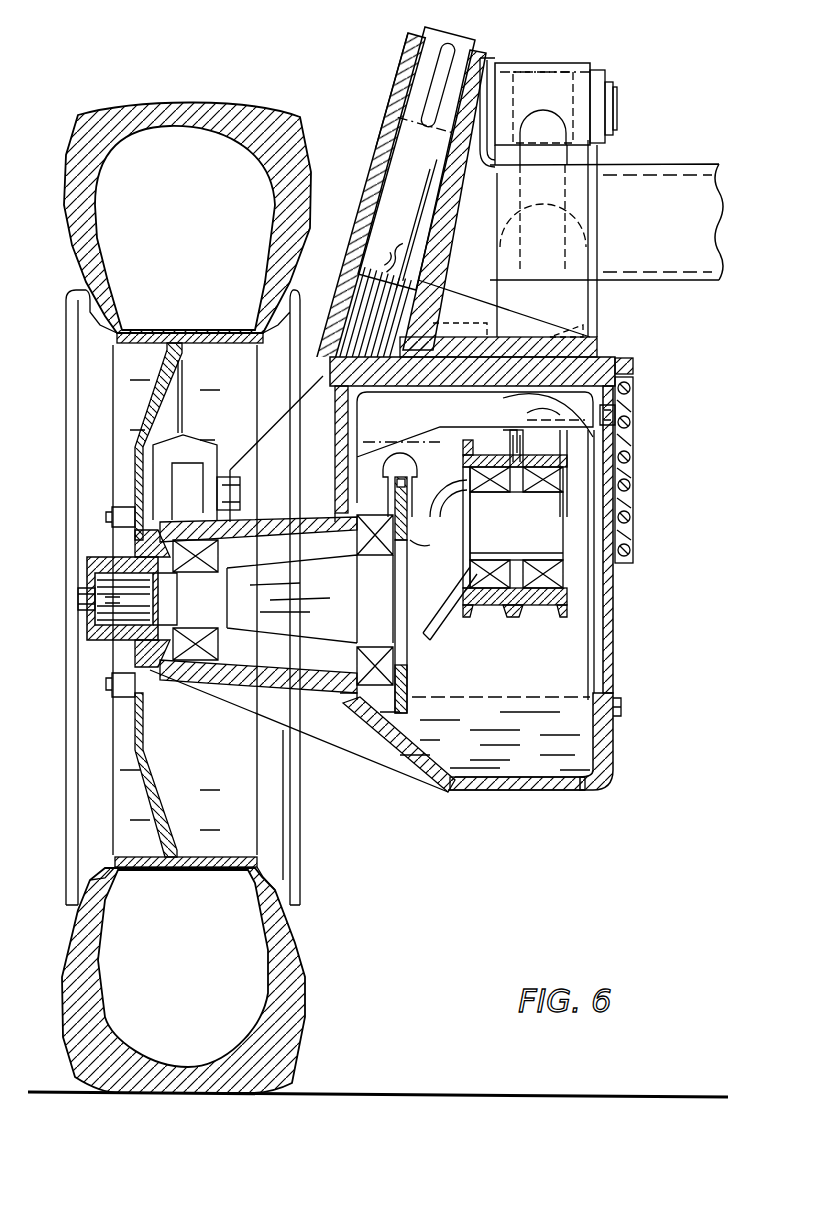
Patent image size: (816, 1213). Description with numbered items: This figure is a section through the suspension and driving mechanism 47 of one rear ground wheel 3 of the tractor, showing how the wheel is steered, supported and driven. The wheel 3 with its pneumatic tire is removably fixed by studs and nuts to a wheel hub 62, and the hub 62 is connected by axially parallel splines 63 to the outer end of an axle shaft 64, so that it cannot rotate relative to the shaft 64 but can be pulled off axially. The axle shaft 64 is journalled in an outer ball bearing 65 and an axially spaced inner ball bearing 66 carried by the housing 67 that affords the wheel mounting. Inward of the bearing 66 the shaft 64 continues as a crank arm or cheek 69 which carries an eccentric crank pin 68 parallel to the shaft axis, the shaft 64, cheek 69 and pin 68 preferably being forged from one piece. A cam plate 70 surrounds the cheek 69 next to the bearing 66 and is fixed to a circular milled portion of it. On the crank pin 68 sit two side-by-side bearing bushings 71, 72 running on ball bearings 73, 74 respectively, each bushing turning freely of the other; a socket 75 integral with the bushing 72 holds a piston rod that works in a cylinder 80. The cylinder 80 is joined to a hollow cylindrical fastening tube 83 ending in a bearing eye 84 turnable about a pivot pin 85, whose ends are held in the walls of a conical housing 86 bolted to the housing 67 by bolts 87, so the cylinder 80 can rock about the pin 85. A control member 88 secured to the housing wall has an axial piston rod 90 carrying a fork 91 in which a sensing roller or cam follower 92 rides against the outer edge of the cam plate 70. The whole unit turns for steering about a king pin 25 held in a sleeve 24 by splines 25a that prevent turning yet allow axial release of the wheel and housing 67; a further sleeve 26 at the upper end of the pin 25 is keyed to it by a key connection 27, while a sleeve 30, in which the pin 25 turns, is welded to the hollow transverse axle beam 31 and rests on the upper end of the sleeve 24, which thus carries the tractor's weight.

The rear ground wheel 3 is at (308, 985).
The sleeve 24 is at (339, 292).
The king pin or steering pivot pin 25 is at (437, 27).
The splines 25a is at (397, 250).
The further sleeve 26 is at (404, 50).
The key connection 27 is at (460, 37).
The sleeve 30 is at (377, 153).
The hollow transverse axle beam 31 is at (692, 281).
The driving mechanism 47 is at (399, 822).
The wheel hub 62 is at (85, 560).
The axially parallel splines 63 is at (95, 645).
The axle shaft 64 is at (258, 640).
The outer ball bearing 65 is at (238, 680).
The inner ball bearing 66 is at (345, 708).
The housing 67 is at (495, 790).
The crank pin 68 is at (578, 565).
The crank arm or cheek 69 is at (432, 635).
The cam plate 70 is at (410, 688).
The bearing bushing 71 is at (506, 618).
The bearing bushing 72 is at (557, 618).
The ball bearing 73 is at (500, 556).
The ball bearing 74 is at (552, 500).
The socket 75 is at (632, 458).
The cylinder 80 is at (590, 252).
The hollow cylindrical fastening tube 83 is at (565, 212).
The bearing eye 84 is at (540, 80).
The pivot pin 85 is at (618, 108).
The conical housing 86 is at (598, 303).
The bolts 87 is at (633, 517).
The control member 88 is at (452, 423).
The piston rod 90 is at (400, 452).
The fork 91 is at (392, 482).
The sensing roller or cam follower 92 is at (432, 507).